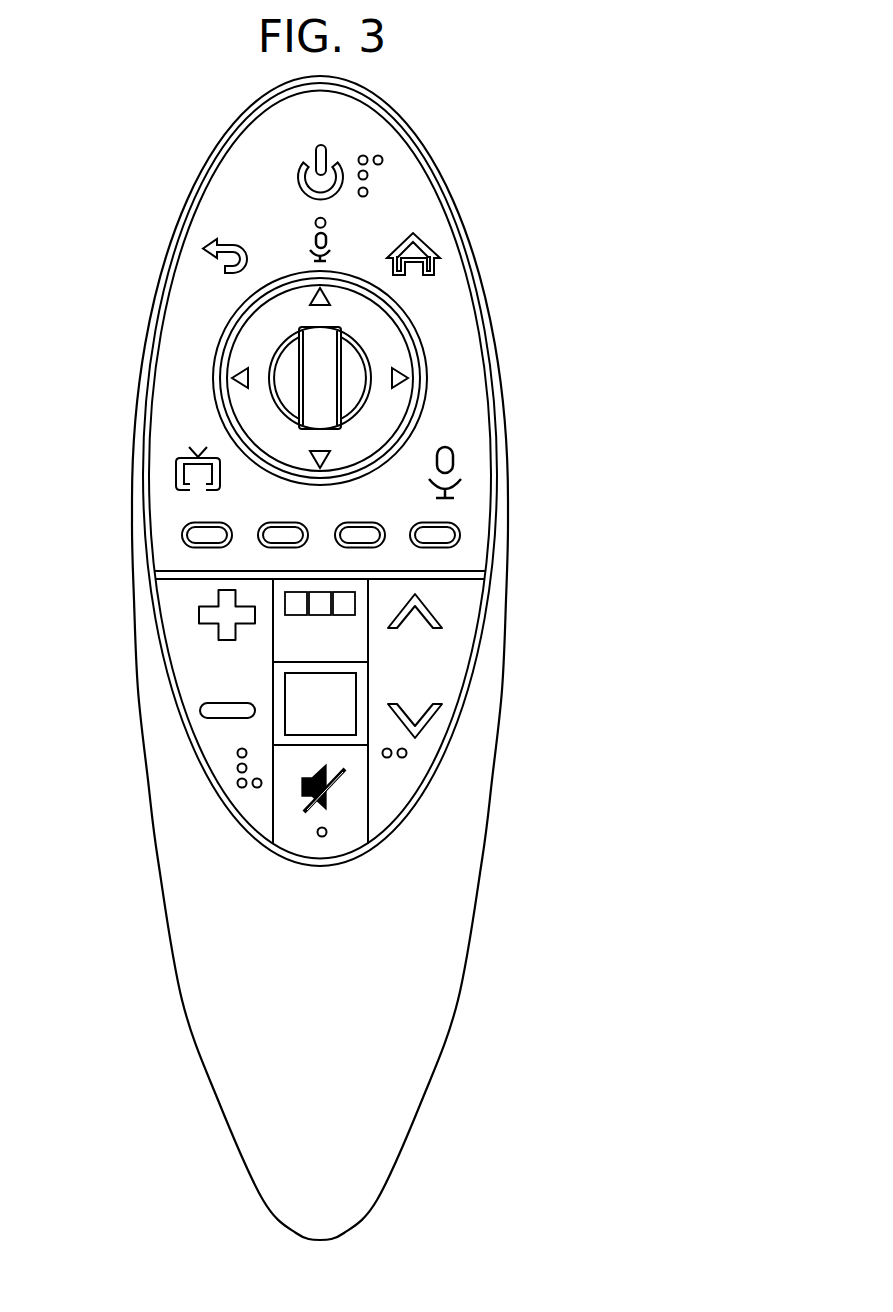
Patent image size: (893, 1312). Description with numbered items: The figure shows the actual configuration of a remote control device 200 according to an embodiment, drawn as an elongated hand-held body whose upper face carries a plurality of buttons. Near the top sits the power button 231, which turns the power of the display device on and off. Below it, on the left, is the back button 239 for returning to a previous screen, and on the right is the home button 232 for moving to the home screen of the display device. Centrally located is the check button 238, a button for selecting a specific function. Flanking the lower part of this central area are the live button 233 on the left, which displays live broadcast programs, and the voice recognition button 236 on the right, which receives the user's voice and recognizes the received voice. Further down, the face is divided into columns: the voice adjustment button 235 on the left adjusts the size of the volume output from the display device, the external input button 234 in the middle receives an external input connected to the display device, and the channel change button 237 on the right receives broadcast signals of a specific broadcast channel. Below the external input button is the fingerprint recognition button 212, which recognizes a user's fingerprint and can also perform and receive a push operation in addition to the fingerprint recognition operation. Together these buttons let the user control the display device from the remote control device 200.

The remote control device 200 is at (75, 122).
The power button 231 is at (341, 160).
The home button 232 is at (434, 242).
The back button 239 is at (202, 249).
The check button 238 is at (283, 358).
The live button 233 is at (177, 473).
The voice recognition button 236 is at (460, 463).
The external input button 234 is at (327, 592).
The voice adjustment button 235 is at (173, 682).
The channel change button 237 is at (453, 652).
The fingerprint recognition button 212 is at (337, 735).